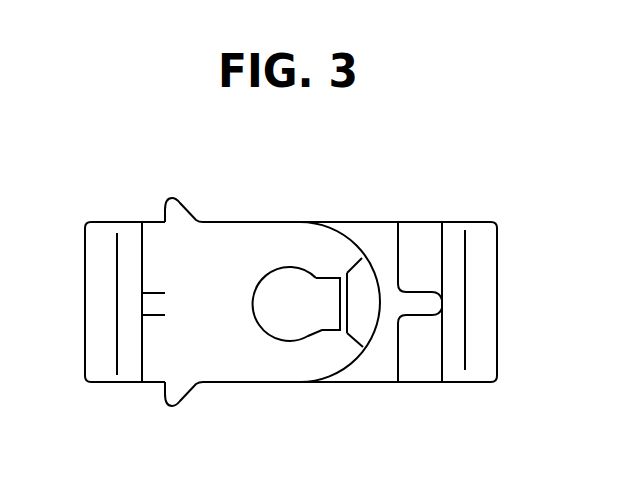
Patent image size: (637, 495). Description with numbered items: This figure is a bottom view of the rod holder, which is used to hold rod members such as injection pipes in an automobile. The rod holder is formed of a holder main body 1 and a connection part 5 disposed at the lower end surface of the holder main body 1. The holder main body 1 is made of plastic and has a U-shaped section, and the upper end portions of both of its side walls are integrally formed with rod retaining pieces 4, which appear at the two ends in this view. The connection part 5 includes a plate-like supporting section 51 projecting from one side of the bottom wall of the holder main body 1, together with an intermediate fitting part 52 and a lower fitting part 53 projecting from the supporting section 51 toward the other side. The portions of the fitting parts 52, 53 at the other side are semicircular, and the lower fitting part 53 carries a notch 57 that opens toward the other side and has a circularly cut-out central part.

The holder main body 1 is at (480, 218).
The rod retaining pieces 4 is at (120, 383).
The connection part 5 is at (290, 289).
The supporting section 51 is at (178, 233).
The intermediate fitting part 52 is at (367, 283).
The lower fitting part 53 is at (262, 363).
The notch 57 is at (296, 293).